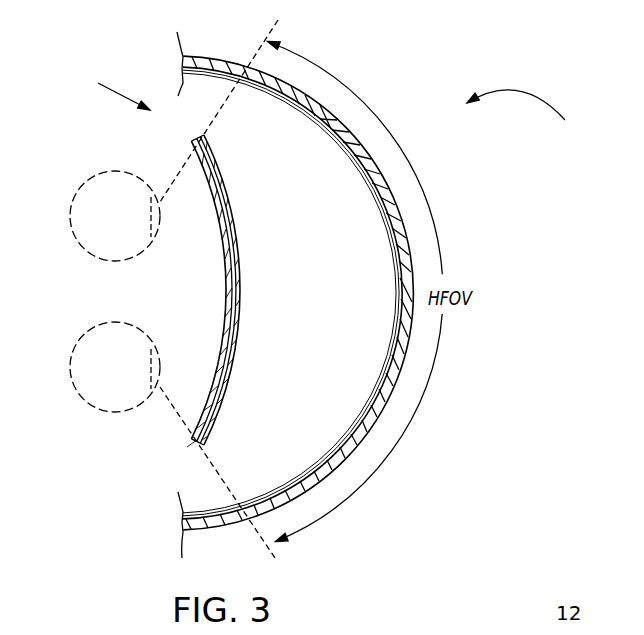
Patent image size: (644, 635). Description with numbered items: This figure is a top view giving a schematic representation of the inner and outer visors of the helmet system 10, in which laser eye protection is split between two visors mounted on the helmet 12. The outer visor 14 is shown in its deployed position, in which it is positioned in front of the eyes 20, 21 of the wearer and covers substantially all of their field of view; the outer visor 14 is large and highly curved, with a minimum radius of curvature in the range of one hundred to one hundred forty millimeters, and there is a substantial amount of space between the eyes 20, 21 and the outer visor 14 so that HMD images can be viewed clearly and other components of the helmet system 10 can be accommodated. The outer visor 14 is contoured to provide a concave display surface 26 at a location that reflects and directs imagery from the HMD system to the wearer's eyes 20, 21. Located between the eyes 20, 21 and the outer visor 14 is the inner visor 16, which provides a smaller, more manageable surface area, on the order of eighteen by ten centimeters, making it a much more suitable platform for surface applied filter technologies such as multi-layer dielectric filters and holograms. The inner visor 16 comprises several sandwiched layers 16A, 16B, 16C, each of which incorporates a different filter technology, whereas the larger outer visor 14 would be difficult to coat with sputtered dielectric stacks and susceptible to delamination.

The helmet system 10 is at (534, 118).
The helmet 12 is at (111, 90).
The outer visor 14 is at (228, 57).
The inner visor 16 is at (240, 220).
The sandwiched layer 16A is at (242, 284).
The sandwiched layer 16B is at (242, 322).
The sandwiched layer 16C is at (222, 365).
The eye 20 is at (93, 328).
The eye 21 is at (102, 173).
The concave display surface 26 is at (358, 415).